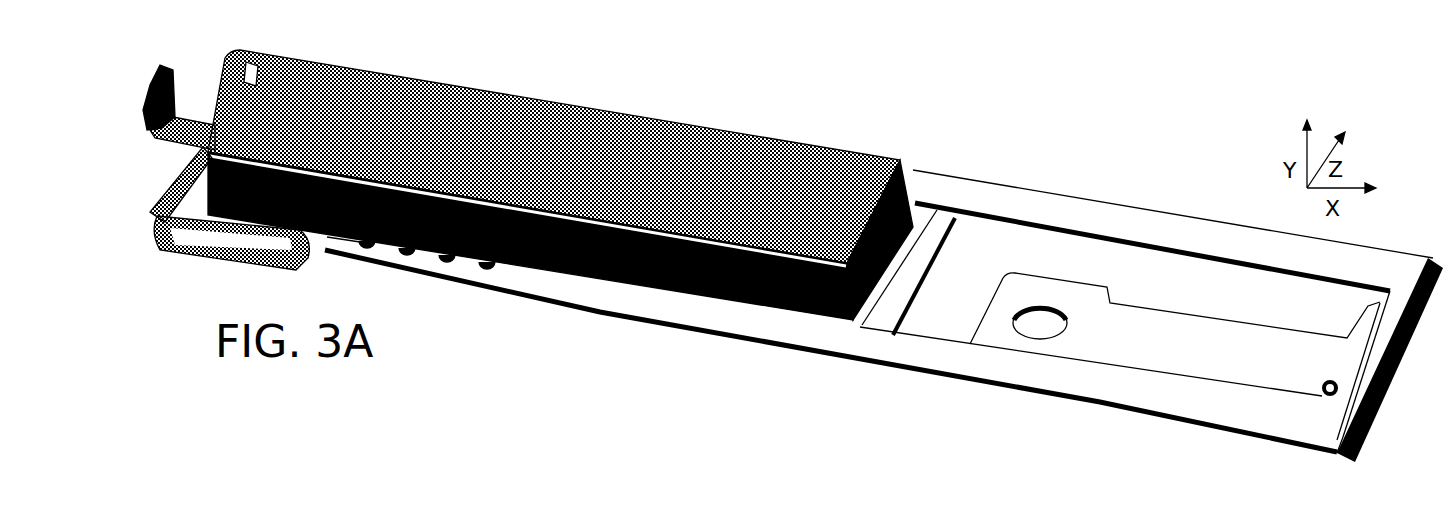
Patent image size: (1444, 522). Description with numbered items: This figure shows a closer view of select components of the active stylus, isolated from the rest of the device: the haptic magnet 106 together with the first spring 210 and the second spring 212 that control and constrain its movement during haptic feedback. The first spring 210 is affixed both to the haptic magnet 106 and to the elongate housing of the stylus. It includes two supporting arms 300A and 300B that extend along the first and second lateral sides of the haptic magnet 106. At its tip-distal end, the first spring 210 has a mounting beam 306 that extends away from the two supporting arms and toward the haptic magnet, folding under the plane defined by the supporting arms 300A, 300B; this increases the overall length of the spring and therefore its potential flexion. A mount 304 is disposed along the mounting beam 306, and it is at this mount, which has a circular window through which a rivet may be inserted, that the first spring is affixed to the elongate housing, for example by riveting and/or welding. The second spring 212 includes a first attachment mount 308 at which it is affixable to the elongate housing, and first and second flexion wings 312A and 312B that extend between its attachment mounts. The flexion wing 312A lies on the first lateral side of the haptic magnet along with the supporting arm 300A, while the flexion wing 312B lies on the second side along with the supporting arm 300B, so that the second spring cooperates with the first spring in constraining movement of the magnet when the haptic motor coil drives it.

The haptic magnet 106 is at (818, 150).
The first spring 210 is at (1078, 197).
The second spring 212 is at (120, 196).
The supporting arm 300A is at (612, 320).
The supporting arm 300B is at (913, 170).
The mount 304 is at (1042, 307).
The mounting beam 306 is at (1178, 317).
The first attachment mount 308 is at (147, 110).
The first flexion wing 312A is at (193, 255).
The second flexion wing 312B is at (250, 52).